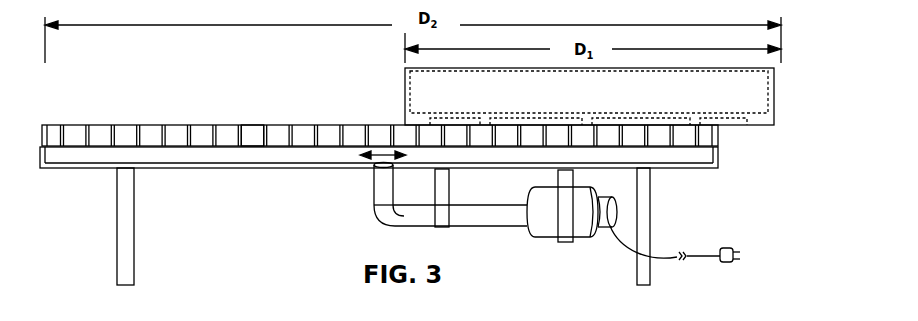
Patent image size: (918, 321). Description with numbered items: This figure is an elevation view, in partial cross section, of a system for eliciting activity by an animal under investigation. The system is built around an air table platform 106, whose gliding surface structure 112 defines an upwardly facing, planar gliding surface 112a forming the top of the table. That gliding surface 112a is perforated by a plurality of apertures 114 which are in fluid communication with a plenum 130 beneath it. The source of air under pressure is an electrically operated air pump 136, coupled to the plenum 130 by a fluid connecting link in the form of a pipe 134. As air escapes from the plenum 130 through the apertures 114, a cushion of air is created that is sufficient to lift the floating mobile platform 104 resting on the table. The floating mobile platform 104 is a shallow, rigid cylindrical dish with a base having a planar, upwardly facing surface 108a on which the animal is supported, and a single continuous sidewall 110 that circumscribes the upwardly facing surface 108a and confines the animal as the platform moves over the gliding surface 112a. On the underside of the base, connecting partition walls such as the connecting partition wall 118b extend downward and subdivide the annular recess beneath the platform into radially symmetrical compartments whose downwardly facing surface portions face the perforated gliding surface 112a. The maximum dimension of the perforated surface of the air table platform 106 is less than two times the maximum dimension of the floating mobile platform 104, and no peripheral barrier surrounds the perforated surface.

The floating mobile platform 104 is at (600, 125).
The air table platform 106 is at (126, 108).
The upwardly facing surface 108a is at (590, 113).
The sidewall 110 is at (589, 96).
The gliding surface structure 112 is at (380, 107).
The gliding surface 112a is at (238, 107).
The apertures 114 is at (317, 125).
The connecting partition wall 118b is at (641, 104).
The plenum 130 is at (345, 180).
The pipe 134 is at (450, 219).
The air pump 136 is at (633, 233).